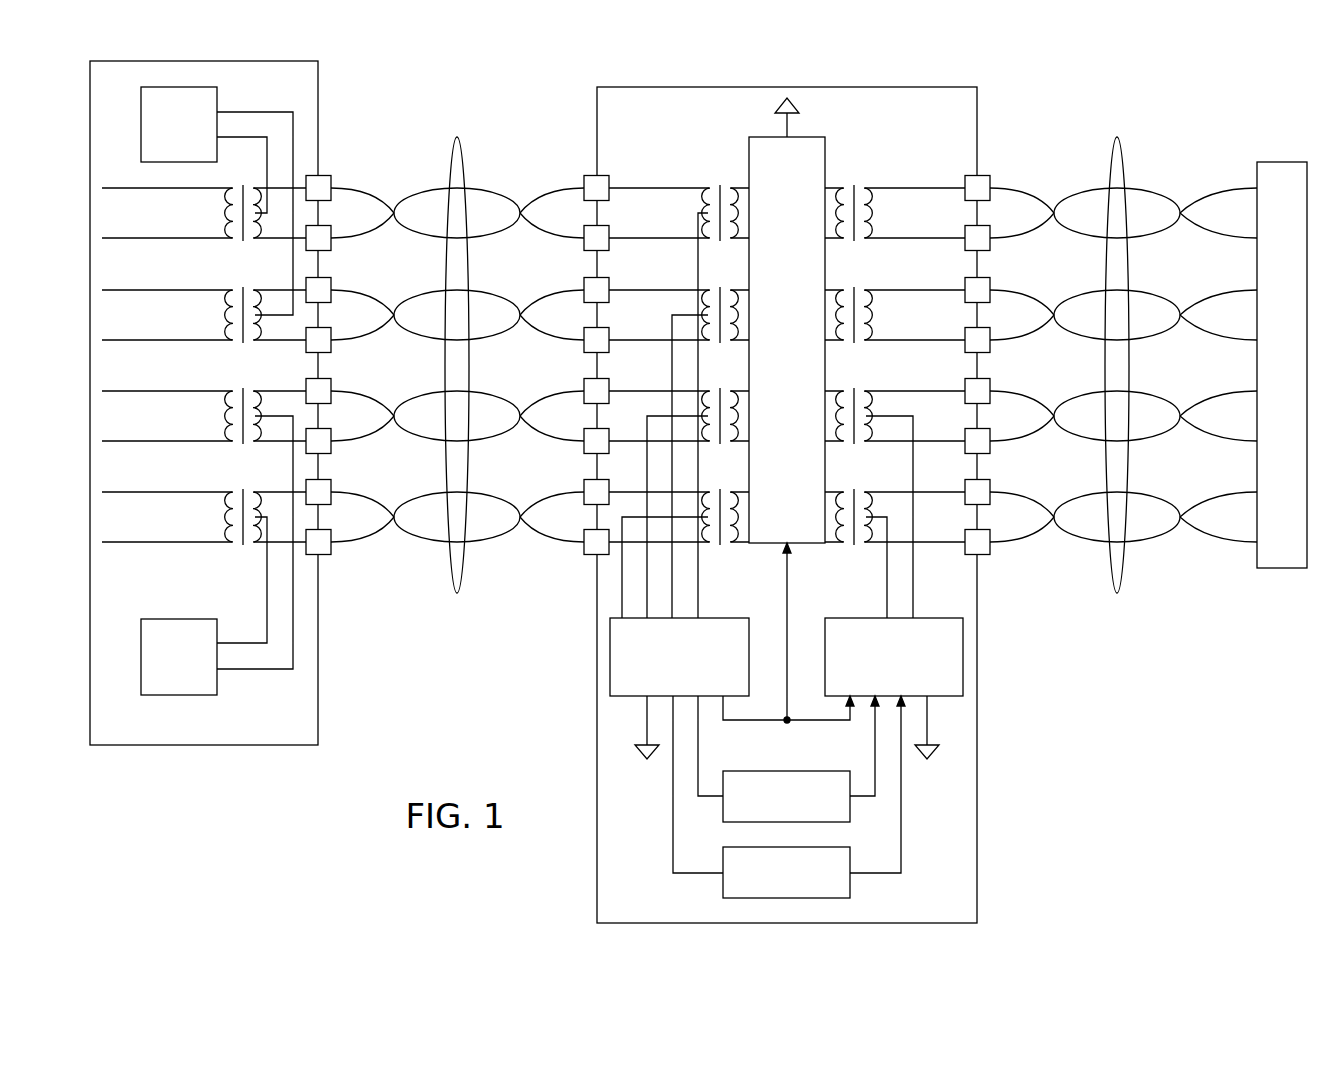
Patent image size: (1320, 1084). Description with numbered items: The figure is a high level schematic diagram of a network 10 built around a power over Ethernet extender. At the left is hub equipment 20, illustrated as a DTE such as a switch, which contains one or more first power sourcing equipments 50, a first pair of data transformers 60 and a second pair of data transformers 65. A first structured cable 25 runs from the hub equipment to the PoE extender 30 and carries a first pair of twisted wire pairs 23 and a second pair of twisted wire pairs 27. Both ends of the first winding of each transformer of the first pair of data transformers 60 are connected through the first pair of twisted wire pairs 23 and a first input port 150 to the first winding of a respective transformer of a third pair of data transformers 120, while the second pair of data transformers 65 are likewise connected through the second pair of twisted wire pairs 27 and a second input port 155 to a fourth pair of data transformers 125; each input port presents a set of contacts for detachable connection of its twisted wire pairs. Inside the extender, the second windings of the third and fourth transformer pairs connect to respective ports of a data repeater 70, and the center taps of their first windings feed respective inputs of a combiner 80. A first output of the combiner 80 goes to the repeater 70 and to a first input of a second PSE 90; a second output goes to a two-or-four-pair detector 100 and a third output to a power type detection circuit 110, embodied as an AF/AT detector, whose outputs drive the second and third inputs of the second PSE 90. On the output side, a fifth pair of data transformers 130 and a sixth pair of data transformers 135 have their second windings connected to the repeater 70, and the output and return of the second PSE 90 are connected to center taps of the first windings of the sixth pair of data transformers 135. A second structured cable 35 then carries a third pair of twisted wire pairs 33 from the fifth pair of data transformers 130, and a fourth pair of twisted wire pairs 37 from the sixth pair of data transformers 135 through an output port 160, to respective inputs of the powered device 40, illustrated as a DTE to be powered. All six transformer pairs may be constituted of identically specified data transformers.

The network 10 is at (383, 86).
The hub equipment 20 is at (318, 98).
The first pair of twisted wire pairs 23 is at (368, 190).
The first structured cable 25 is at (460, 135).
The second pair of twisted wire pairs 27 is at (368, 394).
The PoE extender 30 is at (977, 100).
The third pair of twisted wire pairs 33 is at (1153, 190).
The second structured cable 35 is at (1118, 140).
The fourth pair of twisted wire pairs 37 is at (1153, 393).
The powered device 40 is at (1283, 568).
The first power sourcing equipment 50 is at (205, 87).
The first pair of data transformers 60 is at (242, 187).
The second pair of data transformers 65 is at (242, 389).
The data repeater 70 is at (825, 160).
The combiner 80 is at (609, 660).
The second PSE 90 is at (963, 657).
The 2/4 detector 100 is at (811, 770).
The power type detection circuit 110 is at (850, 885).
The third pair of data transformers 120 is at (725, 183).
The fourth pair of data transformers 125 is at (716, 447).
The fifth pair of data transformers 130 is at (852, 183).
The sixth pair of data transformers 135 is at (852, 386).
The first input port 150 is at (577, 262).
The second input port 155 is at (577, 468).
The output port 160 is at (1003, 467).